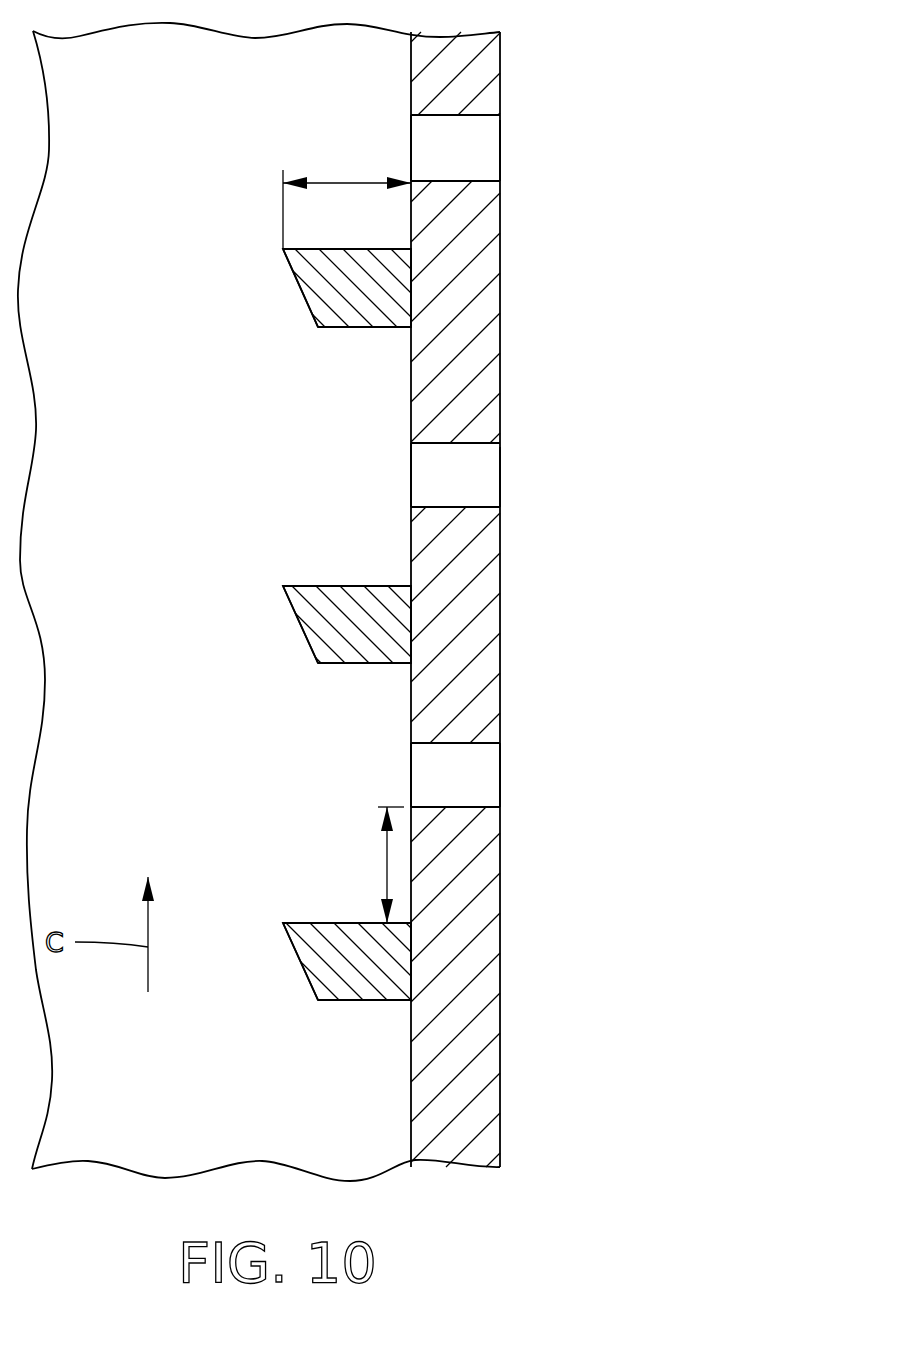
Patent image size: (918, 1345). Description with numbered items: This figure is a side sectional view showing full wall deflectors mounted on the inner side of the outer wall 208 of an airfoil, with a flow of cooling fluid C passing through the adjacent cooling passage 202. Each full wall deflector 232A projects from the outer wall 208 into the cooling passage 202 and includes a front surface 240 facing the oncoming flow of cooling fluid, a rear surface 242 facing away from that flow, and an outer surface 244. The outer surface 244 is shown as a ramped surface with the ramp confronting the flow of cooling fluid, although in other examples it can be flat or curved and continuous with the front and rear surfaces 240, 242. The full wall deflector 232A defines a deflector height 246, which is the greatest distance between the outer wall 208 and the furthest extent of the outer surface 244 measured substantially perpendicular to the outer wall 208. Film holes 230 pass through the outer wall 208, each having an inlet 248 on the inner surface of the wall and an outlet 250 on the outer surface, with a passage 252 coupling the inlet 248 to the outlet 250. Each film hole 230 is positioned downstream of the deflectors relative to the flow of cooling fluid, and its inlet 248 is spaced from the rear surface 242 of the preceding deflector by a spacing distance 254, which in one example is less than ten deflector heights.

The cooling passage 202 is at (156, 362).
The outer wall 208 is at (503, 43).
The film hole 230 is at (503, 125).
The full wall deflector 232A is at (300, 292).
The front surface 240 is at (370, 327).
The rear surface 242 is at (388, 248).
The outer surface 244 is at (313, 316).
The deflector height 246 is at (333, 183).
The inlet 248 is at (411, 140).
The outlet 250 is at (500, 170).
The passage 252 is at (470, 147).
The spacing distance 254 is at (387, 862).